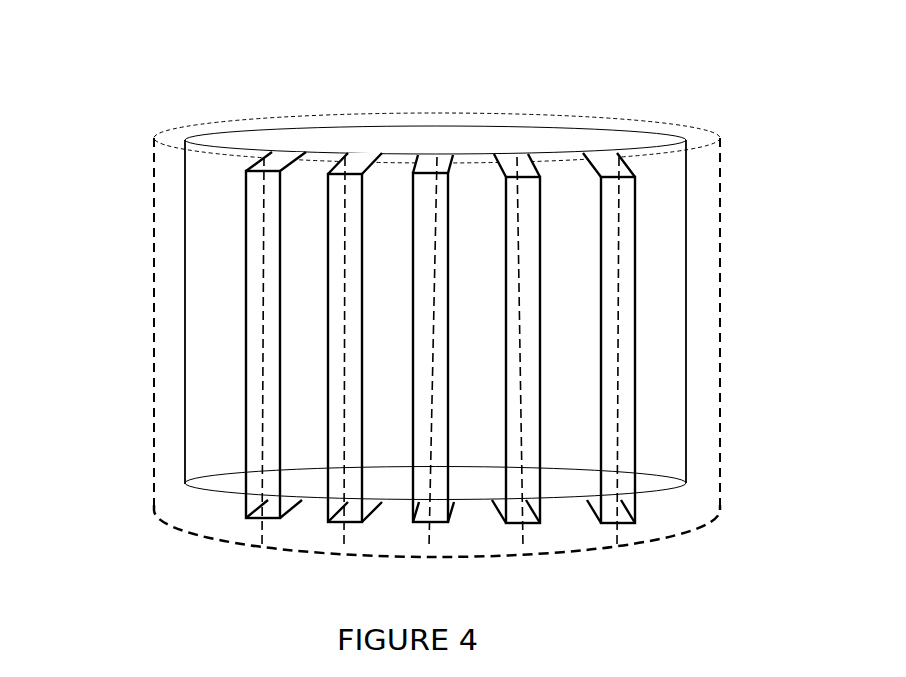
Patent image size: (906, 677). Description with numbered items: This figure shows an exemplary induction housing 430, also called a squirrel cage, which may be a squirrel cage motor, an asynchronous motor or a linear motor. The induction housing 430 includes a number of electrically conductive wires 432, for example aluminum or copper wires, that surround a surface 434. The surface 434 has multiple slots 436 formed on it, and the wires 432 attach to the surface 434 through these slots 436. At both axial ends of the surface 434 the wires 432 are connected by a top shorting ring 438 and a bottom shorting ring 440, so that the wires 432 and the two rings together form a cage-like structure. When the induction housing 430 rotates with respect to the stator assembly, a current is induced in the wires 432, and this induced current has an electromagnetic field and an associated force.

The induction housing 430 is at (120, 97).
The electrically conductive wires 432 is at (522, 435).
The surface 434 is at (220, 205).
The slots 436 is at (328, 318).
The top shorting ring 438 is at (700, 143).
The bottom shorting ring 440 is at (692, 525).